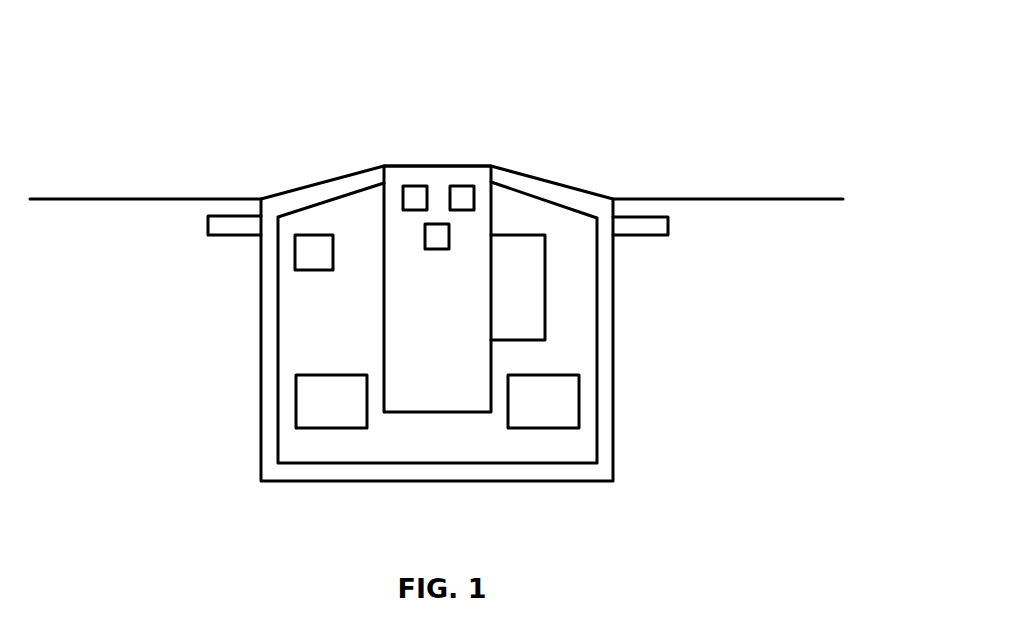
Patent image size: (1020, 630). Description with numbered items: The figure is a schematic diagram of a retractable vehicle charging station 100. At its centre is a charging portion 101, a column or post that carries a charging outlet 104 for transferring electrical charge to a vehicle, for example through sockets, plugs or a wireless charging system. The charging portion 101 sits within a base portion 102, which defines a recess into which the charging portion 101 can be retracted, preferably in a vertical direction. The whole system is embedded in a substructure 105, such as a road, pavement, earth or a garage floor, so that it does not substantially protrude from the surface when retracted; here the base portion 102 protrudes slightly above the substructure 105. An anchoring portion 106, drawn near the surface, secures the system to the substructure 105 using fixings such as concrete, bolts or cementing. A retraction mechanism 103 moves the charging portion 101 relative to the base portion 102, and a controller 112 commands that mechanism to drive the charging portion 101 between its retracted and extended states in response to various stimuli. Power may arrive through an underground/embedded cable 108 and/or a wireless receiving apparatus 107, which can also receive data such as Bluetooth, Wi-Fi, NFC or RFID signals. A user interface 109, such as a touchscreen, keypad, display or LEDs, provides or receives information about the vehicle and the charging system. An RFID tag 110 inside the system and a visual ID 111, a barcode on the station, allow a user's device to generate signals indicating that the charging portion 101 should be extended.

The charging station 100 is at (313, 123).
The charging portion 101 is at (384, 287).
The base portion 102 is at (261, 376).
The retraction mechanism 103 is at (545, 290).
The charging outlet 104 is at (474, 185).
The substructure 105 is at (775, 198).
The anchoring portion 106 is at (668, 222).
The wireless receiving apparatus 107 is at (332, 428).
The underground/embedded cable 108 is at (145, 463).
The user interface 109 is at (437, 224).
The RFID tag 110 is at (295, 252).
The visual ID 111 is at (403, 185).
The controller 112 is at (542, 428).